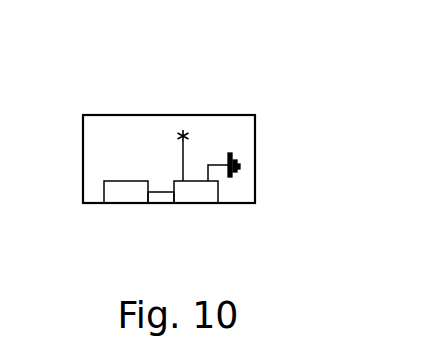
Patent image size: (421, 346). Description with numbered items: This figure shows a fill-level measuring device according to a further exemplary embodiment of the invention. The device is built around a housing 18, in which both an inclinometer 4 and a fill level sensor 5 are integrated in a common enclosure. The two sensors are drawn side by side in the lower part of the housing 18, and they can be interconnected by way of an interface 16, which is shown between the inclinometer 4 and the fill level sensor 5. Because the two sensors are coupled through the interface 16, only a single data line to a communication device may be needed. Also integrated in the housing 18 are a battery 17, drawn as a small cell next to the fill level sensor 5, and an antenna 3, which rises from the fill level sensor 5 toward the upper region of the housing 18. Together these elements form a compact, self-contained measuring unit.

The housing 18 is at (117, 115).
The inclinometer 4 is at (127, 193).
The interface 16 is at (162, 193).
The fill level sensor 5 is at (203, 193).
The antenna 3 is at (188, 152).
The battery 17 is at (235, 152).